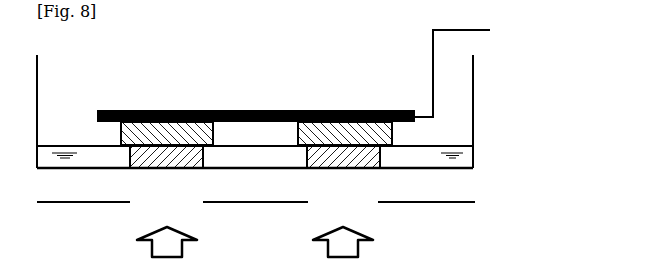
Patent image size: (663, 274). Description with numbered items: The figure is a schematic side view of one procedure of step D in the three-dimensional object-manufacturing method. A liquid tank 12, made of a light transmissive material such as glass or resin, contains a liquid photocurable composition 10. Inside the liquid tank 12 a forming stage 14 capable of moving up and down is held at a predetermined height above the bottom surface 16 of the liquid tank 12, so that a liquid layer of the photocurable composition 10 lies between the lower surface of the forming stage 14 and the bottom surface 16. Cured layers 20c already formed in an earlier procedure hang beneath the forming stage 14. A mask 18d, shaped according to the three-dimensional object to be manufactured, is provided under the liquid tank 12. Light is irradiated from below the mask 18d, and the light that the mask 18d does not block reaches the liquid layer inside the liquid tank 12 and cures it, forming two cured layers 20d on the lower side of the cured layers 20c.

The liquid tank 12 is at (474, 98).
The liquid photocurable composition 10 is at (467, 157).
The bottom surface 16 is at (452, 170).
The forming stage 14 is at (252, 110).
The cured layers 20c is at (163, 136).
The cured layers 20d is at (168, 158).
The mask 18d is at (88, 203).